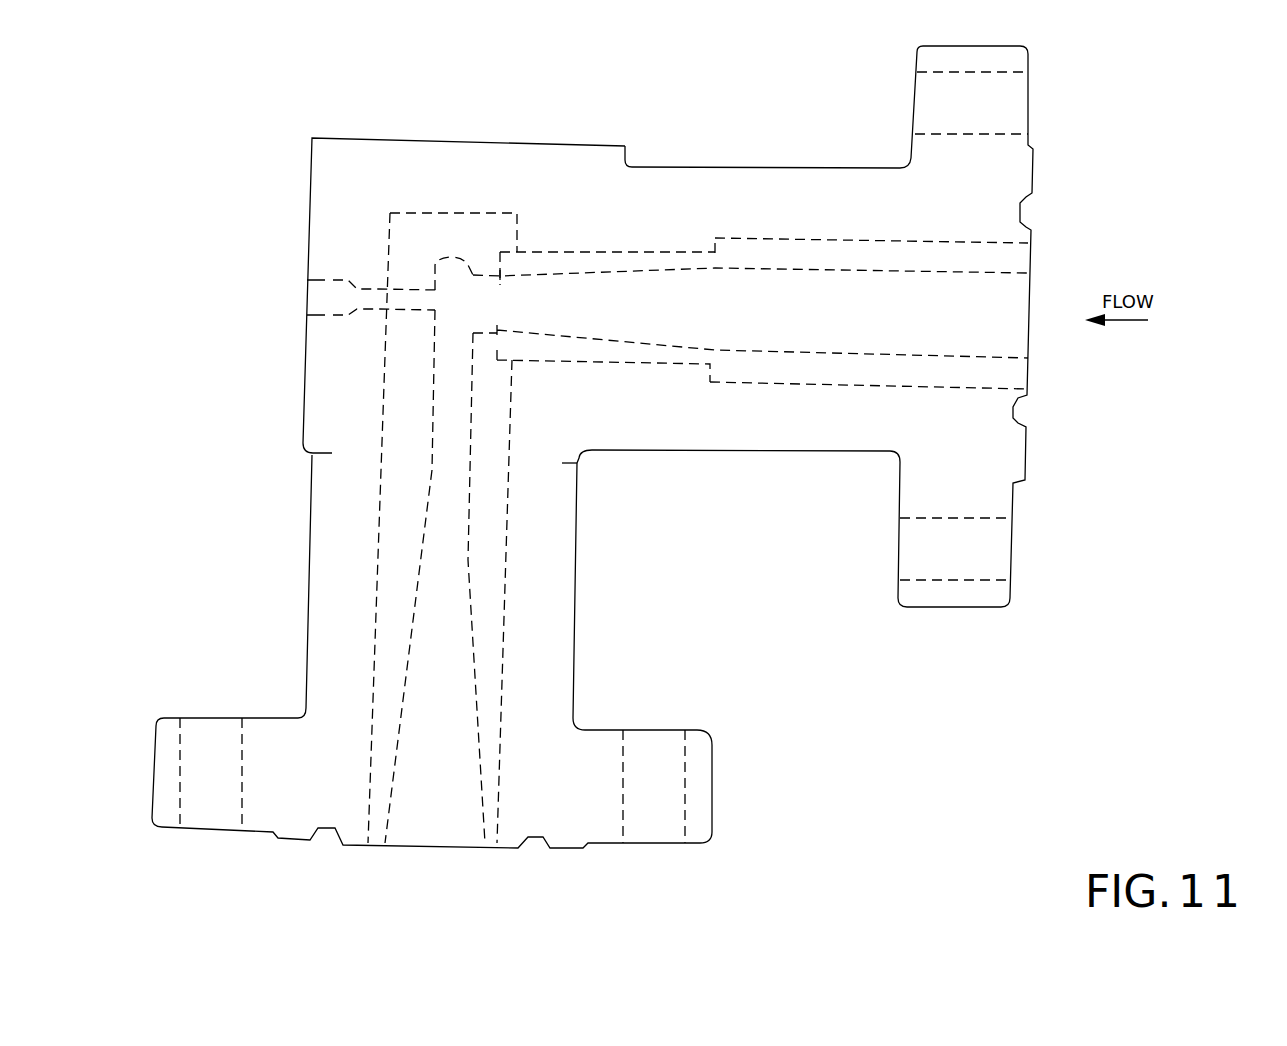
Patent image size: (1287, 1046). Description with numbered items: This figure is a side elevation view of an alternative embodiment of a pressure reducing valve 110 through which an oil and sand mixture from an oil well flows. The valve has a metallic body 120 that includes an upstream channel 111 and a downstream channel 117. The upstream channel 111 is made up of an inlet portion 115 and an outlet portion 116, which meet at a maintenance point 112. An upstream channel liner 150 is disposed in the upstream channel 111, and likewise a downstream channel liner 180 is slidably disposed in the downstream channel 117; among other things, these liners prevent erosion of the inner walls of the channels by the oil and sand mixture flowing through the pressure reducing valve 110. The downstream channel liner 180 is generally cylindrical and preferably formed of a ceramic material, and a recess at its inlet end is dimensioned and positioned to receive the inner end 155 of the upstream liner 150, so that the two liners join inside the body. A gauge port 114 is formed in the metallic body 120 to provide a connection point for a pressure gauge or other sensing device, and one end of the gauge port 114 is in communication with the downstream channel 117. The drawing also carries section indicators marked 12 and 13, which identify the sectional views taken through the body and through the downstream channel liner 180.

The pressure reducing valve 110 is at (1113, 140).
The upstream channel 111 is at (977, 333).
The maintenance point 112 is at (712, 370).
The gauge port 114 is at (303, 298).
The inlet portion 115 is at (865, 239).
The outlet portion 116 is at (602, 252).
The downstream channel 117 is at (428, 772).
The metallic body 120 is at (396, 148).
The upstream channel liner 150 is at (921, 395).
The inner end 155 is at (547, 257).
The downstream channel liner 180 is at (502, 640).
The section view indicator 12 is at (530, 303).
The section view indicator 13 is at (482, 225).